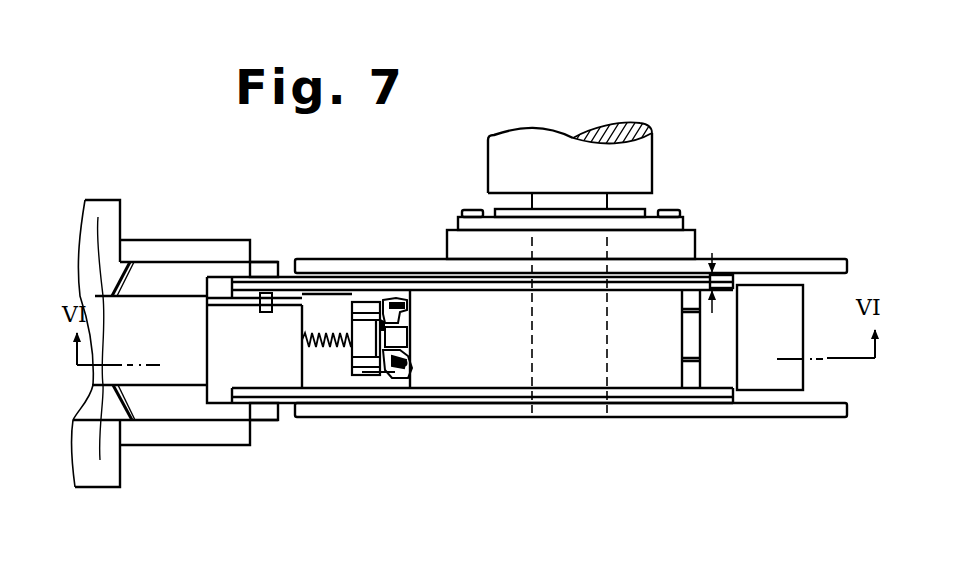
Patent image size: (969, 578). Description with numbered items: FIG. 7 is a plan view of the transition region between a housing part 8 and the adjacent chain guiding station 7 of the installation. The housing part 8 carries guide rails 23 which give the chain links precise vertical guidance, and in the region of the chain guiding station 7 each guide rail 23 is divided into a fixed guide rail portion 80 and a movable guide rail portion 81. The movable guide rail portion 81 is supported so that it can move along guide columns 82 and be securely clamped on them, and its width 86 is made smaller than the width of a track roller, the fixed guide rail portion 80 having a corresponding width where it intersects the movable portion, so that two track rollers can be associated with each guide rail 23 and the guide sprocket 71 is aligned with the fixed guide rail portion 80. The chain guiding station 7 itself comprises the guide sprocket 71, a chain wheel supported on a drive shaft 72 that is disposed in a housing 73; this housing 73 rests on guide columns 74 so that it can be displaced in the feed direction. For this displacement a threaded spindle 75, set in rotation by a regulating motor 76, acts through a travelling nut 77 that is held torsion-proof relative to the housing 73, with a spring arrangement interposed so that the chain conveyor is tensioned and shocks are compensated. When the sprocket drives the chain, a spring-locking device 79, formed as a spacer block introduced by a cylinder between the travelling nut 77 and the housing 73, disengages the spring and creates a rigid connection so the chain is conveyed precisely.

The chain guiding station 7 is at (202, 227).
The housing part 8 is at (98, 217).
The guide rails 23 is at (105, 238).
The guide sprocket 71 is at (807, 263).
The drive shaft 72 is at (590, 203).
The housing 73 is at (642, 362).
The guide columns 74 is at (400, 307).
The threaded spindle 75 is at (323, 348).
The regulating motor 76 is at (250, 355).
The travelling nut 77 is at (365, 362).
The spring-locking device 79 is at (409, 367).
The fixed guide rail portion 80 is at (263, 268).
The movable guide rail portion 81 is at (478, 287).
The guide columns 82 is at (220, 298).
The width of the guide rail portion 86 is at (717, 281).